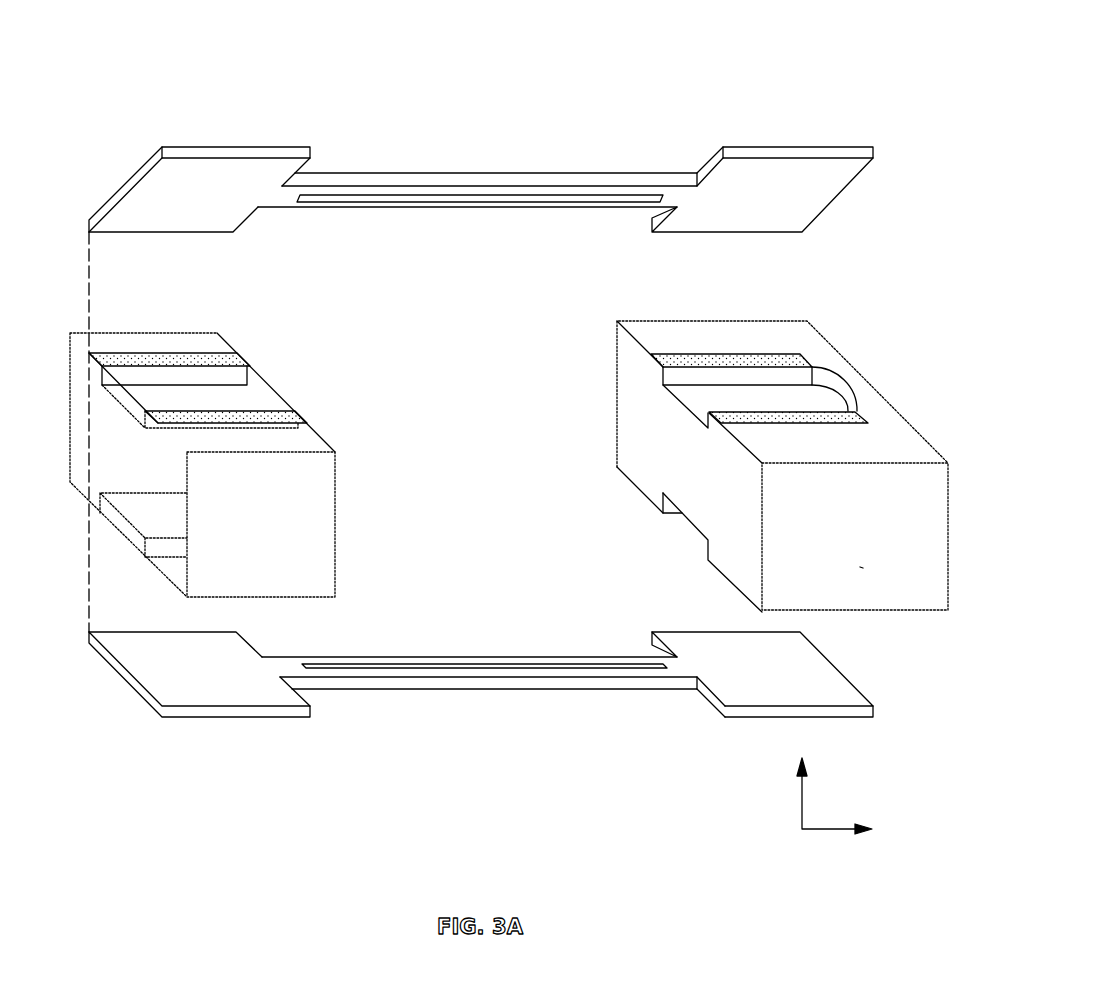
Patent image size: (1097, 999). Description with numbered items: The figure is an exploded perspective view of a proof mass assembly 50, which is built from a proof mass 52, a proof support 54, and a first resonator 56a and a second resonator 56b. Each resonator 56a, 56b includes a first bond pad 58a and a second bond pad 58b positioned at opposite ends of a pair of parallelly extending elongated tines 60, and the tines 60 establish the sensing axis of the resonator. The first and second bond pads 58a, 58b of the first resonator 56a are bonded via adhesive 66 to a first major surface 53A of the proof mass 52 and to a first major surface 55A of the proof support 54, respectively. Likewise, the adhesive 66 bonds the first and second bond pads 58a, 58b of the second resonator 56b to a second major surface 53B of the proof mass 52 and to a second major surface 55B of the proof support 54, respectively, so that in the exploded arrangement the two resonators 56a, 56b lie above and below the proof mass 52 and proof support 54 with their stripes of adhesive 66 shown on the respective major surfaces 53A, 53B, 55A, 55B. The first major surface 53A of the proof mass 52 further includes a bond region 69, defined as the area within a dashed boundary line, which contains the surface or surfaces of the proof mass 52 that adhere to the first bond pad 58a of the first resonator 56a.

The proof mass assembly 50 is at (850, 72).
The proof mass 52 is at (898, 502).
The first major surface 53A is at (686, 330).
The second major surface 53B is at (713, 567).
The proof support 54 is at (272, 539).
The first major surface 55A is at (165, 340).
The second major surface 55B is at (177, 589).
The first resonator 56a is at (665, 168).
The second resonator 56b is at (279, 656).
The first bond pad 58a is at (781, 207).
The second bond pad 58b is at (224, 207).
The elongated tines 60 is at (480, 205).
The adhesive 66 is at (278, 416).
The bond region 69 is at (863, 567).